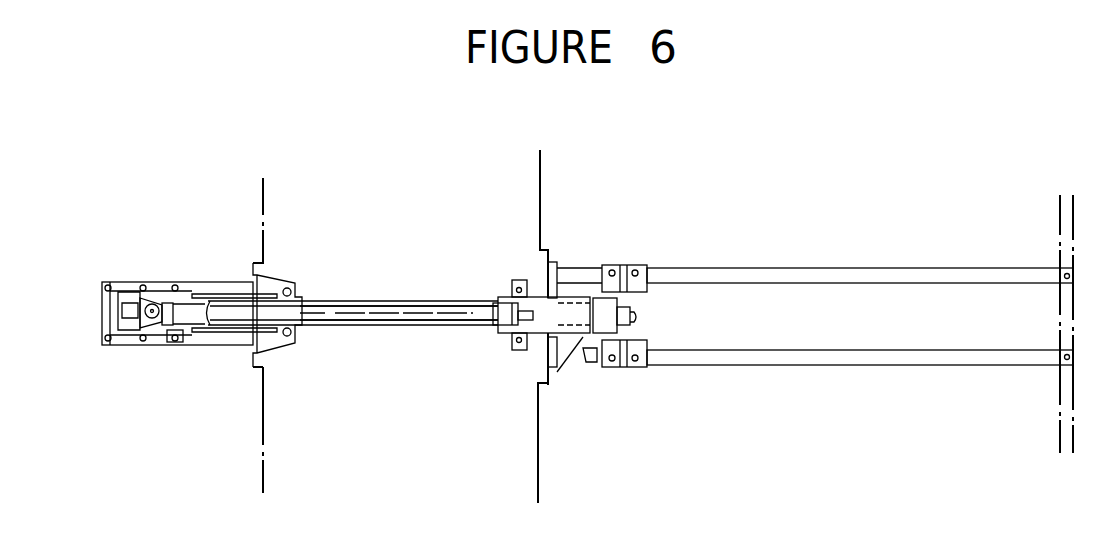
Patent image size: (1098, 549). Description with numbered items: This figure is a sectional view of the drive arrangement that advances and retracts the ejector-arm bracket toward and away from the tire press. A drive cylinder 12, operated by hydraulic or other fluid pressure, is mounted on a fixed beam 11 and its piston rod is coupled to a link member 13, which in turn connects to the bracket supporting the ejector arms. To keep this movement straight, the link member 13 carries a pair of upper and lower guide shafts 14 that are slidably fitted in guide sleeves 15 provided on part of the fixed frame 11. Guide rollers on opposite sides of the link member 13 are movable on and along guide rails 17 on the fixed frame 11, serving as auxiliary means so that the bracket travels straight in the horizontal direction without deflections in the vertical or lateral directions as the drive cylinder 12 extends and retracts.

The fixed beam 11 is at (225, 280).
The drive cylinder 12 is at (391, 300).
The guide shafts 14 is at (391, 326).
The guide sleeves 15 is at (537, 297).
The link member 13 is at (598, 297).
The guide rails 17 is at (818, 273).